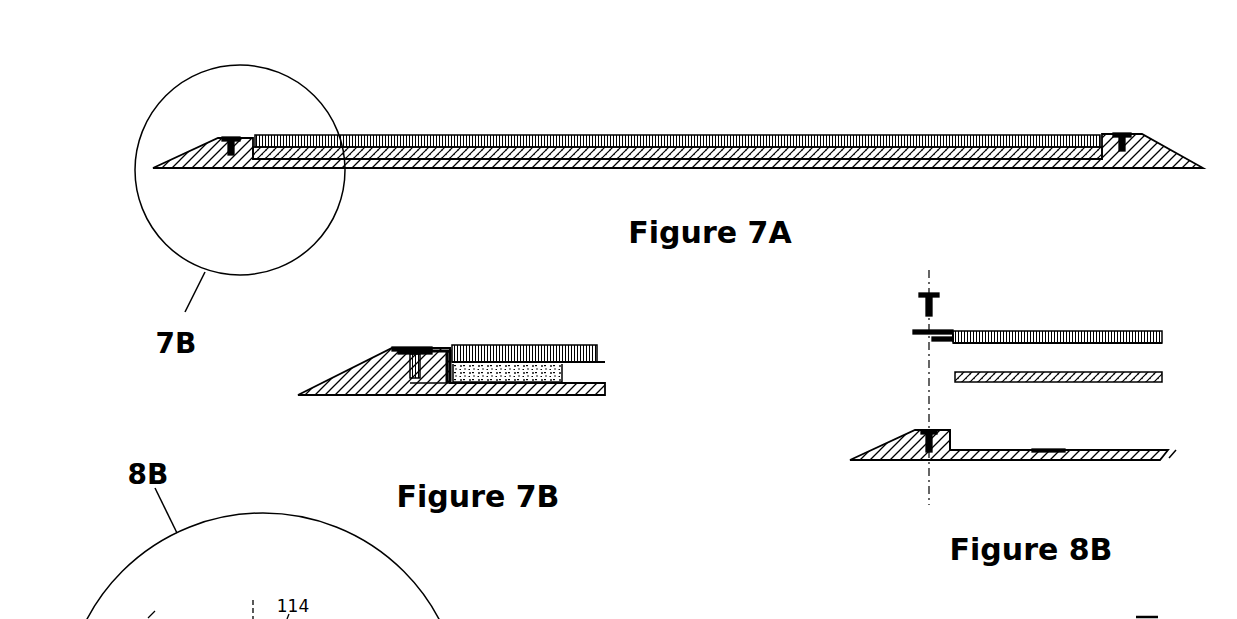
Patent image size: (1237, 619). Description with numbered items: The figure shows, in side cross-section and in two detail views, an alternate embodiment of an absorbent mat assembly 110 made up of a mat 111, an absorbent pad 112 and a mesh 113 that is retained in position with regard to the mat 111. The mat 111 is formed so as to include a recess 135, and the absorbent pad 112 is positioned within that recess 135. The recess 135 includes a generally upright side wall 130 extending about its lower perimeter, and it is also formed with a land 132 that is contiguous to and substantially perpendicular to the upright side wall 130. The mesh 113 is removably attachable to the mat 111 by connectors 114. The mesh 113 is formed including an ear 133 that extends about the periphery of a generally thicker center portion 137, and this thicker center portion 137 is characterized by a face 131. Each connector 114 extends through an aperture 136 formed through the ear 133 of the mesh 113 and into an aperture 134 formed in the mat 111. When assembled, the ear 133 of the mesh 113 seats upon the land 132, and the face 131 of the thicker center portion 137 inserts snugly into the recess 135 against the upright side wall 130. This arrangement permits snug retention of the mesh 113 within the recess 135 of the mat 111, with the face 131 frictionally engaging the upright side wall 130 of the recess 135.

In FIG. 7A, the absorbent mat assembly 110 is at (593, 73).
In FIG. 7A, the mat 111 is at (396, 169).
In FIG. 7B, the mat 111 is at (578, 396).
In FIG. 8B, the mat 111 is at (1152, 460).
In FIG. 7A, the absorbent pad 112 is at (486, 168).
In FIG. 7B, the absorbent pad 112 is at (527, 383).
In FIG. 8B, the absorbent pad 112 is at (1106, 382).
In FIG. 7A, the mesh 113 is at (433, 136).
In FIG. 7B, the mesh 113 is at (495, 345).
In FIG. 8B, the mesh 113 is at (1070, 331).
In FIG. 7A, the connector 114 is at (232, 137).
In FIG. 7B, the connector 114 is at (416, 350).
In FIG. 8B, the connector 114 is at (938, 297).
In FIG. 7B, the upright side wall 130 is at (440, 376).
In FIG. 8B, the upright side wall 130 is at (950, 436).
In FIG. 7B, the face 131 is at (443, 348).
In FIG. 8B, the face 131 is at (930, 341).
In FIG. 7B, the land 132 is at (392, 358).
In FIG. 8B, the land 132 is at (922, 432).
In FIG. 7B, the ear 133 is at (393, 348).
In FIG. 8B, the ear 133 is at (918, 330).
In FIG. 8B, the aperture 134 is at (937, 433).
In FIG. 7B, the recess 135 is at (588, 372).
In FIG. 8B, the recess 135 is at (1036, 451).
In FIG. 8B, the aperture 136 is at (944, 333).
In FIG. 7B, the thicker center portion 137 is at (576, 362).
In FIG. 8B, the thicker center portion 137 is at (1040, 338).